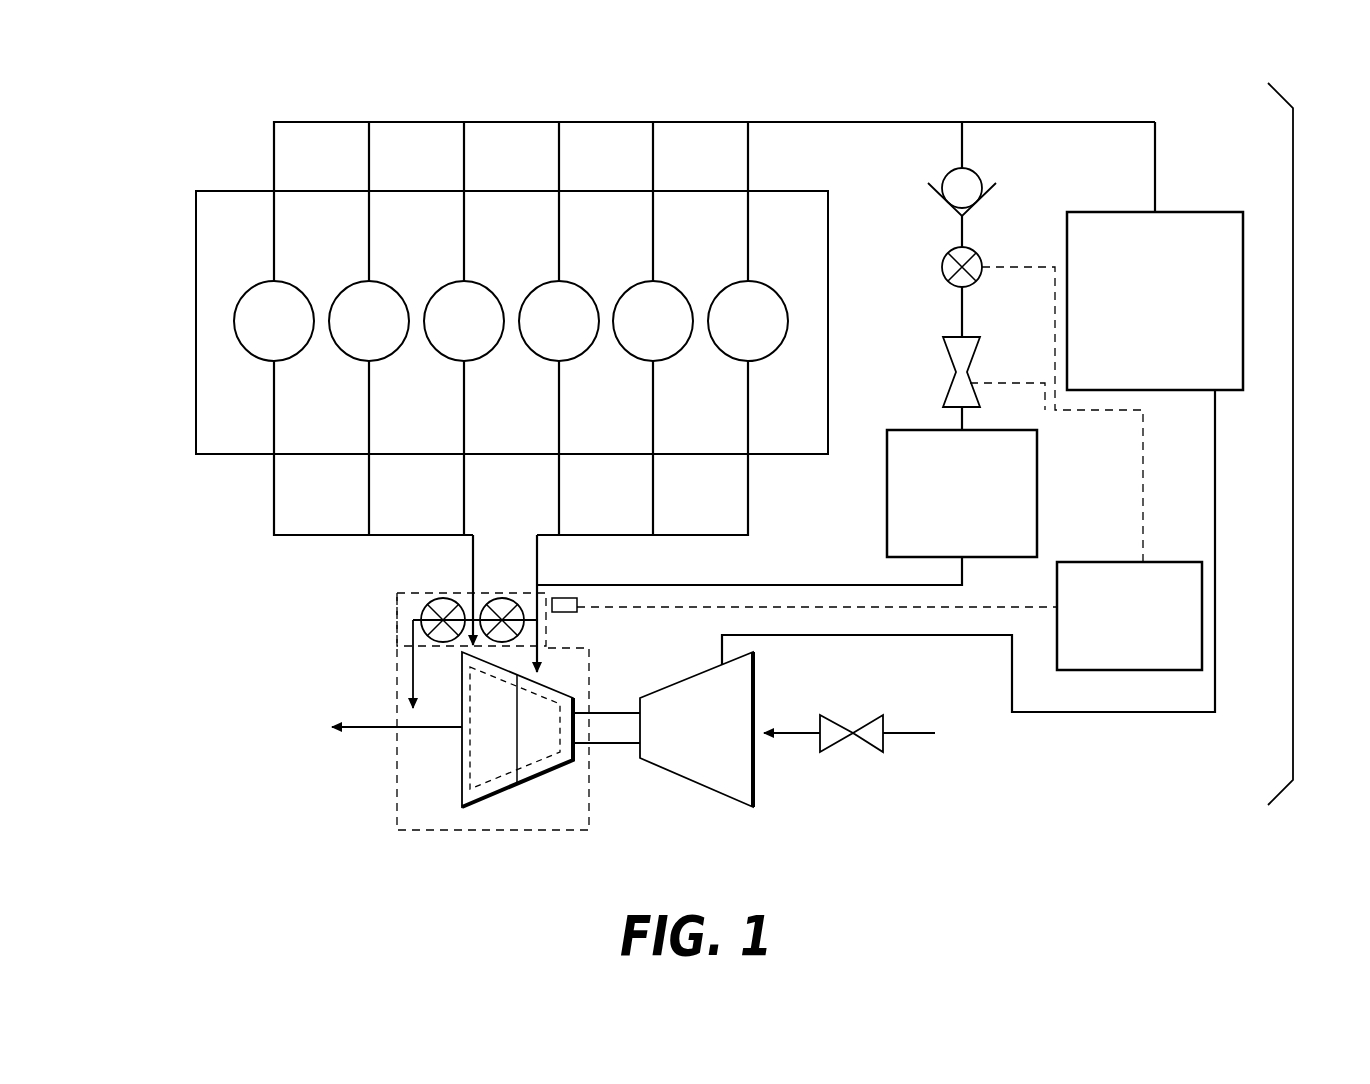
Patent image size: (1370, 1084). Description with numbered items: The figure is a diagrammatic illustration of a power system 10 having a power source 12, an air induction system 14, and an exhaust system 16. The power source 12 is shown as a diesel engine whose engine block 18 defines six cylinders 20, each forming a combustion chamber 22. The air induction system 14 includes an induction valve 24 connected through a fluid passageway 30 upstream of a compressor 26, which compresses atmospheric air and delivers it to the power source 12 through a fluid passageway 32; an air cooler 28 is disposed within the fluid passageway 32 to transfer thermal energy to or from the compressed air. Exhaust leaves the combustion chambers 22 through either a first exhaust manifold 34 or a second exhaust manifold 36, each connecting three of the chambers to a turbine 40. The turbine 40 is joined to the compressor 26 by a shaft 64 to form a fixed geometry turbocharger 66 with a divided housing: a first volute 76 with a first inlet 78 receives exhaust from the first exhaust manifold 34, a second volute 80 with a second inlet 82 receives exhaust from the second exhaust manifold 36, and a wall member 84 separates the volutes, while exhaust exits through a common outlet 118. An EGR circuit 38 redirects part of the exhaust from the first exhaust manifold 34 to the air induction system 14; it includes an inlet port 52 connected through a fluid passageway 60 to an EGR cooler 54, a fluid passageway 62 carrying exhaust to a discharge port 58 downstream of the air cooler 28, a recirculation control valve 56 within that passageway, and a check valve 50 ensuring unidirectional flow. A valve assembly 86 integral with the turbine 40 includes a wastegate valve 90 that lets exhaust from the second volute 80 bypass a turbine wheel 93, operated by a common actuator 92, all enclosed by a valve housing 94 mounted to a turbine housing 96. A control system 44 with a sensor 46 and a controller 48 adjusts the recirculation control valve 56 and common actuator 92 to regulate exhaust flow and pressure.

The power system 10 is at (210, 102).
The power source 12 is at (183, 465).
The air induction system 14 is at (1294, 278).
The exhaust system 16 is at (198, 717).
The engine block 18 is at (244, 437).
The cylinder 20 is at (262, 355).
The combustion chamber 22 is at (262, 306).
The induction valve 24 is at (868, 715).
The compressor 26 is at (745, 788).
The air cooler 28 is at (1185, 208).
The fluid passageway 30 is at (782, 724).
The fluid passageway 32 is at (1210, 716).
The first exhaust manifold 34 is at (628, 536).
The second exhaust manifold 36 is at (281, 538).
The exhaust gas recirculation (EGR) circuit 38 is at (1035, 198).
The turbine 40 is at (624, 795).
The control system 44 is at (1068, 695).
The sensor 46 is at (978, 370).
The controller 48 is at (1095, 560).
The check valve 50 is at (950, 178).
The inlet port 52 is at (540, 582).
The EGR cooler 54 is at (887, 490).
The recirculation control valve 56 is at (978, 260).
The discharge port 58 is at (966, 126).
The fluid passageway 60 is at (720, 583).
The fluid passageway 62 is at (966, 320).
The shaft 64 is at (627, 743).
The fixed geometry turbocharger 66 is at (312, 645).
The first volute 76 is at (572, 698).
The first inlet 78 is at (542, 680).
The second volute 80 is at (463, 810).
The second inlet 82 is at (486, 590).
The wall member 84 is at (517, 765).
The valve assembly 86 is at (348, 622).
The wastegate valve 90 is at (428, 594).
The common actuator 92 is at (565, 612).
The turbine wheel 93 is at (482, 820).
The valve housing 94 is at (394, 627).
The turbine housing 96 is at (388, 828).
The common outlet 118 is at (358, 732).